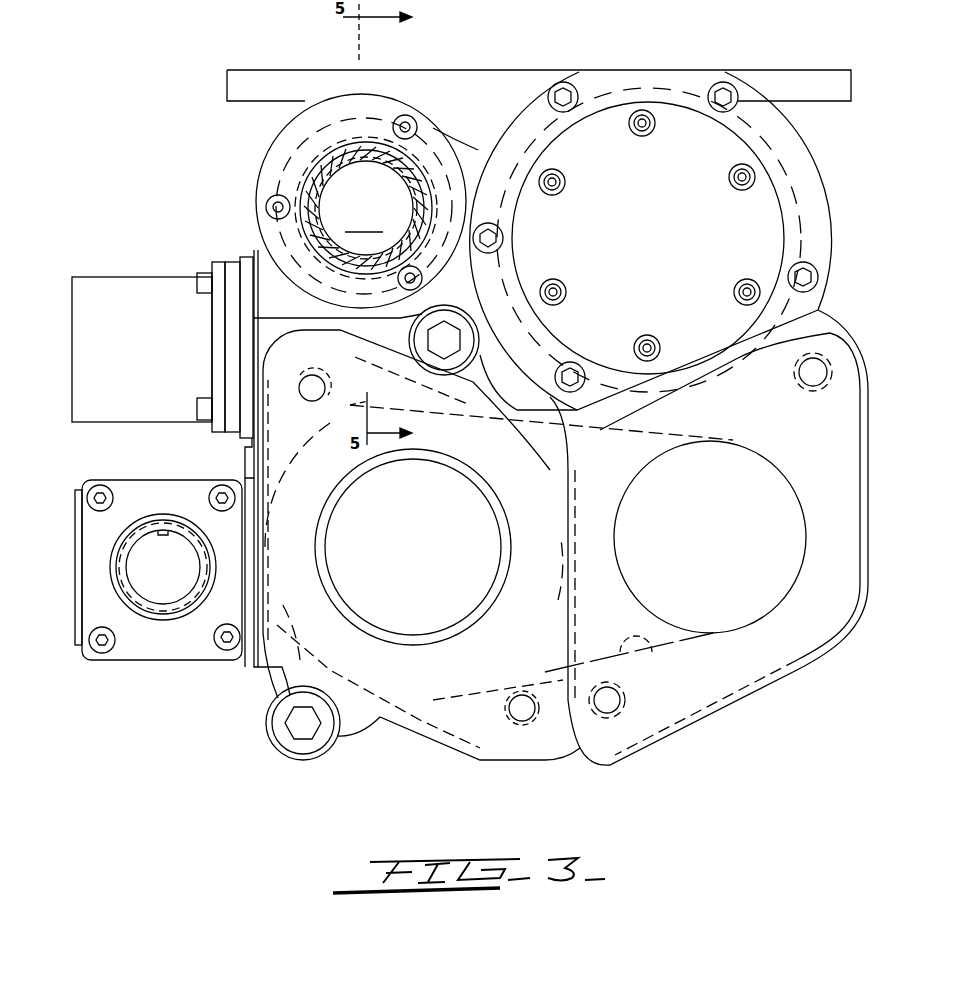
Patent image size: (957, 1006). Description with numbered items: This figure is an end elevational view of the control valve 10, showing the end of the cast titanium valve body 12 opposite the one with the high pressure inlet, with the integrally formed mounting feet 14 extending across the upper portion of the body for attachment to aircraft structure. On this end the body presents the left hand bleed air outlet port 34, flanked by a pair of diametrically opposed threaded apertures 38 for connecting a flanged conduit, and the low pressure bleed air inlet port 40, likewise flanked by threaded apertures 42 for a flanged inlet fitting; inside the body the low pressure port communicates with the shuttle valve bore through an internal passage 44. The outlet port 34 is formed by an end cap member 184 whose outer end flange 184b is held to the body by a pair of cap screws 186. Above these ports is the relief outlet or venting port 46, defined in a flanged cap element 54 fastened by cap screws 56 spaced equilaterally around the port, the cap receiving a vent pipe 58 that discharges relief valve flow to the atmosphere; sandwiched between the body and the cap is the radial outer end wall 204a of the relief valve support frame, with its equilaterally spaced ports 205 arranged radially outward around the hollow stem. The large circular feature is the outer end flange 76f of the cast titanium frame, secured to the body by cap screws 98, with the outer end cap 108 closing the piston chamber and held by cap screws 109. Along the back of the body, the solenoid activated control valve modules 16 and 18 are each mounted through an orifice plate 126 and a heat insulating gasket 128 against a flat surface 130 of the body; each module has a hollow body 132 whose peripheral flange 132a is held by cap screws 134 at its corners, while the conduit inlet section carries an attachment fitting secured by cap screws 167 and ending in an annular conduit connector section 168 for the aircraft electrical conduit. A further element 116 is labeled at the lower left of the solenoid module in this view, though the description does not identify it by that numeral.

The control valve 10 is at (718, 738).
The valve body 12 is at (250, 175).
The mounting feet 14 is at (227, 86).
The solenoid activated control valve module 16 is at (161, 461).
The solenoid activated control valve module 18 is at (108, 578).
The left hand bleed air outlet port 34 is at (330, 558).
The threaded apertures 38 is at (303, 385).
The low pressure bleed air inlet port 40 is at (765, 628).
The threaded apertures 42 is at (822, 362).
The internal passage 44 is at (640, 650).
The relief outlet or venting port 46 is at (388, 163).
The flanged cap element 54 is at (280, 150).
The cap screws 56 is at (405, 114).
The vent pipe or conduit 58 is at (420, 190).
The outer end flange 76f is at (530, 100).
The cap screws 98 is at (578, 94).
The outer end cap 108 is at (633, 266).
The cap screws 109 is at (645, 137).
The port flange 116 is at (86, 541).
The orifice plate 126 is at (256, 234).
The heat insulating gasket 128 is at (252, 466).
The flat surface 130 is at (224, 318).
The hollow body 132 is at (90, 329).
The peripheral flange 132a is at (222, 376).
The cap screws 134 is at (205, 273).
The cap screws 167 is at (210, 498).
The conduit connector section 168 is at (195, 608).
The end cap member 184 is at (360, 722).
The outer end flange 184b is at (540, 626).
The cap screws 186 is at (445, 350).
The radial outer end wall 204a is at (366, 208).
The ports 205 is at (385, 284).